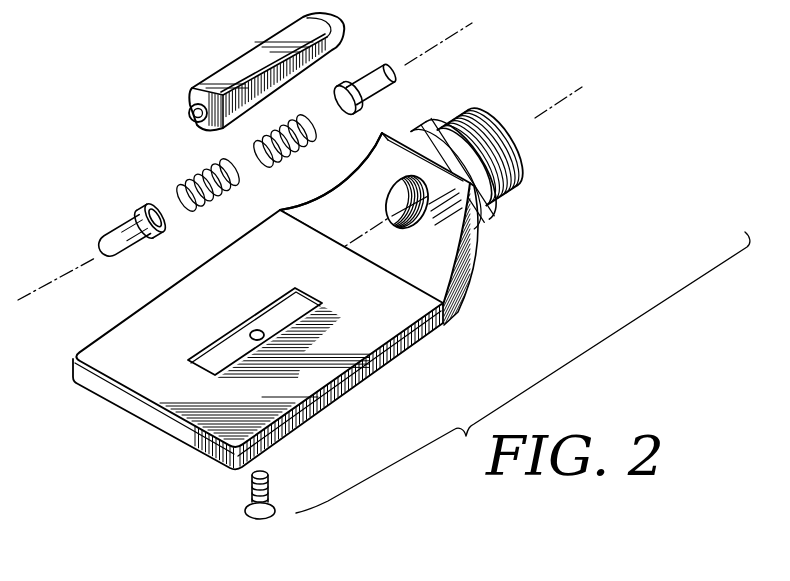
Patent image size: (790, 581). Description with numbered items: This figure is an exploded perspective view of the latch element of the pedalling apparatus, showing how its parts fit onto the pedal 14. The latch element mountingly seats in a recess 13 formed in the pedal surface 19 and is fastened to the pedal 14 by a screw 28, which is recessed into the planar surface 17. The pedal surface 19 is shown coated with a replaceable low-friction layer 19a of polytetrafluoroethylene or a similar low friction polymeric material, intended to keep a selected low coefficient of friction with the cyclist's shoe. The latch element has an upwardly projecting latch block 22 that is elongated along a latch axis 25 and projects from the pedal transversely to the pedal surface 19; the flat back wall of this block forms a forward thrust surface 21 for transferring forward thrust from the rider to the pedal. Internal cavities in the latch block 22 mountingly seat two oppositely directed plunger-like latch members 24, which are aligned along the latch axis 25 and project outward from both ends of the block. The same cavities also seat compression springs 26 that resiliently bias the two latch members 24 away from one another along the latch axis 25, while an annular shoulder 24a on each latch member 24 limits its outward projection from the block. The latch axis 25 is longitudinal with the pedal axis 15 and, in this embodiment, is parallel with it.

The recess 13 is at (278, 310).
The pedal 14 is at (191, 326).
The pedal axis 15 is at (563, 100).
The planar surface 17 is at (413, 360).
The pedal surface 19 is at (243, 256).
The low-friction layer 19a is at (122, 333).
The forward thrust surface 21 is at (328, 50).
The latch block 22 is at (246, 56).
The latch member 24 is at (397, 78).
The annular shoulder 24a is at (366, 99).
The latch axis 25 is at (442, 38).
The compression spring 26 is at (298, 147).
The screw 28 is at (270, 490).